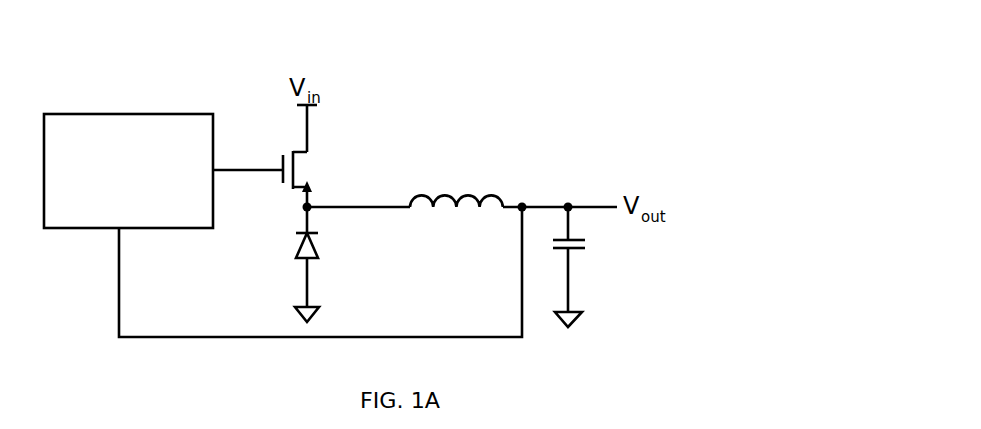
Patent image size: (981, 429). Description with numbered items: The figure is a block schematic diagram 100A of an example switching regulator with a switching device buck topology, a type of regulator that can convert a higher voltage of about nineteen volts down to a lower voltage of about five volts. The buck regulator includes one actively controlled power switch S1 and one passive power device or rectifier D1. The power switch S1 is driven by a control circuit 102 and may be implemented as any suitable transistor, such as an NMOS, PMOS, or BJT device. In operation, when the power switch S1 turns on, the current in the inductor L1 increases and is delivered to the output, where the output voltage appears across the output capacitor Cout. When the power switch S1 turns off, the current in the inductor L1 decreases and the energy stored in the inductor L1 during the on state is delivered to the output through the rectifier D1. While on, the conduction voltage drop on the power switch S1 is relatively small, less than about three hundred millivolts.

The block schematic diagram 100A is at (731, 54).
The control circuit 102 is at (149, 212).
The power switch S1 is at (303, 167).
The inductor L1 is at (457, 192).
The passive power device or rectifier D1 is at (320, 255).
The output capacitor Cout is at (585, 250).